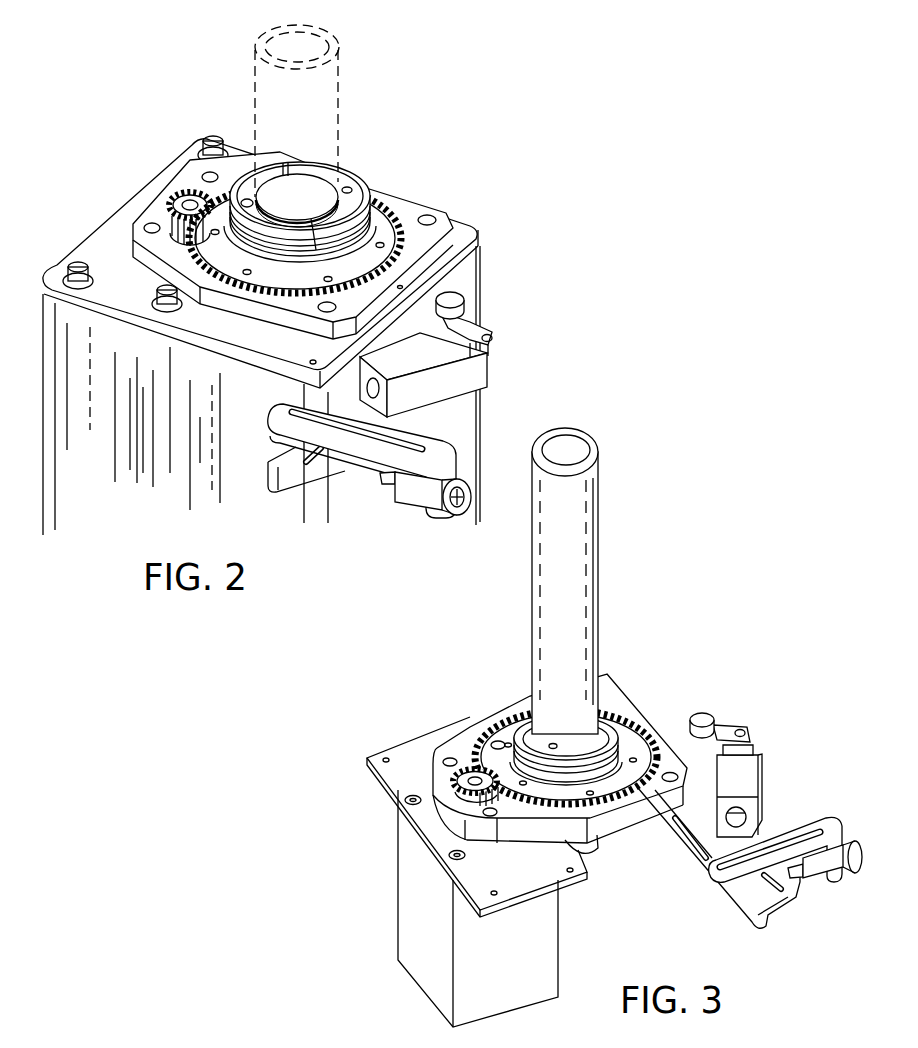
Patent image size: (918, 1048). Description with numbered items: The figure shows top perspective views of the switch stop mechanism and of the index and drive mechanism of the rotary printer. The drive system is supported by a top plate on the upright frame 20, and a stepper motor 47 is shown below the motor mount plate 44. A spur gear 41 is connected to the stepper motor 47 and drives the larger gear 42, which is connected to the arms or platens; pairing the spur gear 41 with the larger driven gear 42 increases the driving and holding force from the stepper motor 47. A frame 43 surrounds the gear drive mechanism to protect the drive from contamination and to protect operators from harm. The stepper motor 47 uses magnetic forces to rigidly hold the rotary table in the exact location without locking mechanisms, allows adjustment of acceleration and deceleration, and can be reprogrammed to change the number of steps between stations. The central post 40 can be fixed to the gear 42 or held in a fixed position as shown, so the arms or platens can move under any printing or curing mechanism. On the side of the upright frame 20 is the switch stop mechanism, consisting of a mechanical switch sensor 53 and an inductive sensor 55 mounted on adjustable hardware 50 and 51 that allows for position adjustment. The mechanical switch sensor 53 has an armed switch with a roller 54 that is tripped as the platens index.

In FIG. 2, the upright frame 20 is at (480, 270).
In FIG. 2, the central post 40 is at (253, 72).
In FIG. 3, the central post 40 is at (532, 614).
In FIG. 2, the spur gear 41 is at (172, 201).
In FIG. 3, the spur gear 41 is at (460, 775).
In FIG. 2, the gear 42 is at (383, 207).
In FIG. 3, the gear 42 is at (640, 723).
In FIG. 3, the frame 43 is at (483, 714).
In FIG. 3, the motor mount plate 44 is at (380, 773).
In FIG. 3, the stepper motor 47 is at (397, 887).
In FIG. 2, the adjustable hardware 50 is at (268, 484).
In FIG. 3, the adjustable hardware 50 is at (737, 912).
In FIG. 2, the adjustable hardware 51 is at (455, 446).
In FIG. 3, the adjustable hardware 51 is at (710, 867).
In FIG. 2, the mechanical switch sensor 53 is at (490, 365).
In FIG. 3, the mechanical switch sensor 53 is at (760, 775).
In FIG. 2, the roller 54 is at (464, 298).
In FIG. 3, the roller 54 is at (704, 712).
In FIG. 2, the inductive sensor 55 is at (380, 484).
In FIG. 3, the inductive sensor 55 is at (800, 879).